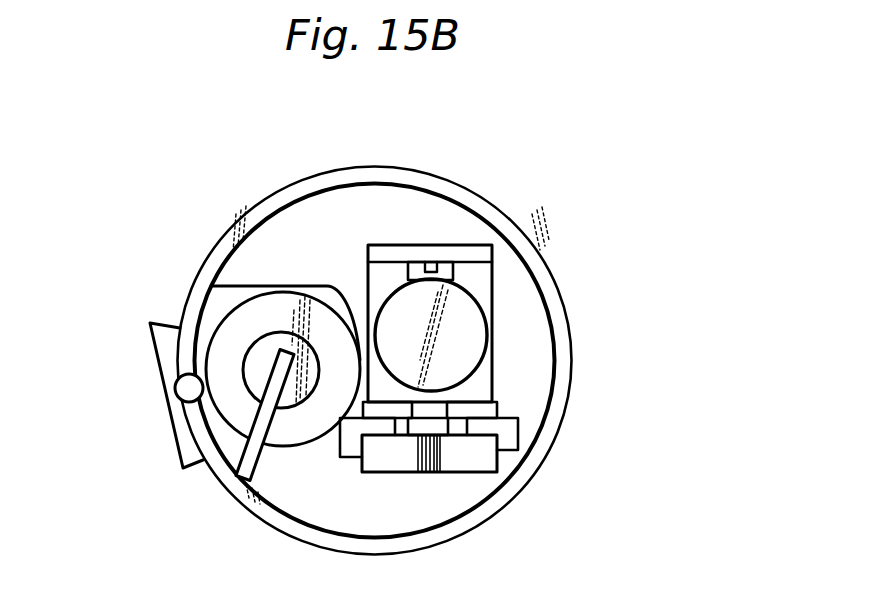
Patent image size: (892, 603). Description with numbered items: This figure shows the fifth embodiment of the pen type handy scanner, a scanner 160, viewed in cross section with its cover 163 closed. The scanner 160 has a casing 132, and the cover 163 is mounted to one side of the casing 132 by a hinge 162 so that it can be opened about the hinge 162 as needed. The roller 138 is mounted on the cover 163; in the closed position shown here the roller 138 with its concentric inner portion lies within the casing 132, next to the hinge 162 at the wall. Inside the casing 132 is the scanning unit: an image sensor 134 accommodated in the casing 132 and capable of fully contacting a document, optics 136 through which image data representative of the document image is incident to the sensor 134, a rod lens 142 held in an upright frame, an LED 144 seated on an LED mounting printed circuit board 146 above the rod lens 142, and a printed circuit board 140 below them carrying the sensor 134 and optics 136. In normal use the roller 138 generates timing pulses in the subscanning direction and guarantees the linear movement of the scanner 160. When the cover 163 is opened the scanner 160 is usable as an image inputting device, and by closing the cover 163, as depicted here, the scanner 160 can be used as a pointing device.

The casing 132 is at (322, 186).
The image sensor 134 is at (432, 427).
The optics 136 is at (477, 458).
The roller 138 is at (237, 332).
The printed circuit board 140 is at (473, 402).
The rod lens 142 is at (463, 330).
The LED 144 is at (440, 263).
The LED mounting printed circuit board 146 is at (425, 248).
The scanner 160 is at (573, 203).
The hinge 162 is at (184, 388).
The cover 163 is at (483, 507).